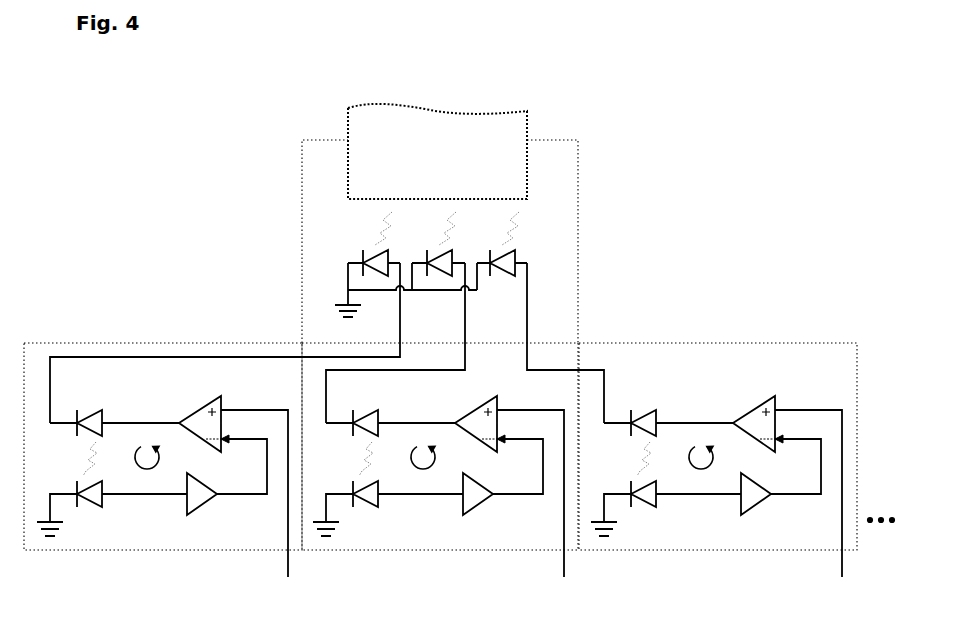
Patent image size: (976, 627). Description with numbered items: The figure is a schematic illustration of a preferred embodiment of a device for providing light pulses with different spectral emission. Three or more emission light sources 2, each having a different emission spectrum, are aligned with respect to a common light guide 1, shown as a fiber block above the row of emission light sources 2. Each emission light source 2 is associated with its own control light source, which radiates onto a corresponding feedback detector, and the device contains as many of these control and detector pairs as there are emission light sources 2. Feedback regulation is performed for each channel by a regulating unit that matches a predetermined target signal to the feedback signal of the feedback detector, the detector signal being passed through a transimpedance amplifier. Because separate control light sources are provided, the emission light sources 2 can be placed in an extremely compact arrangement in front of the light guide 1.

The light guide 1 is at (428, 151).
The emission light source 2 is at (445, 244).